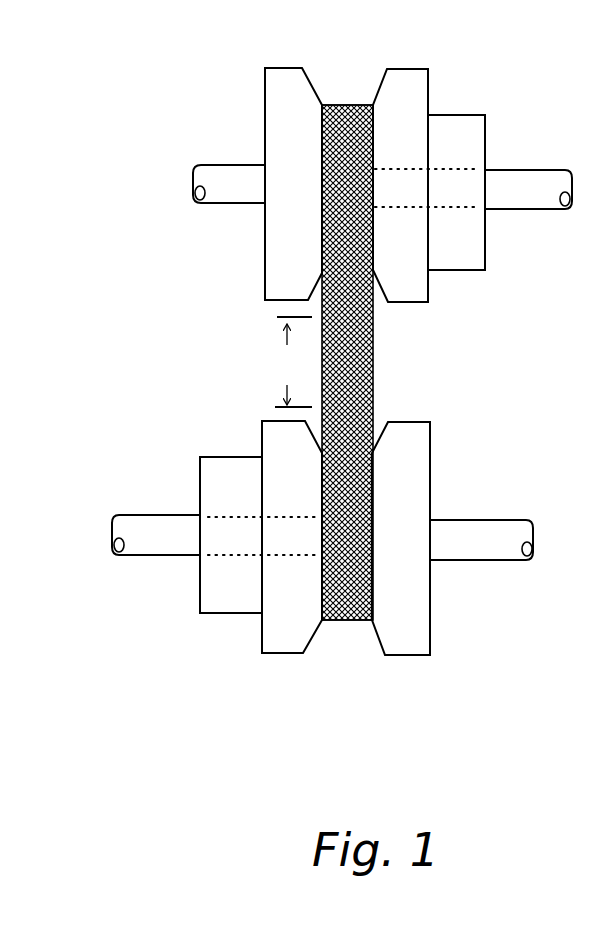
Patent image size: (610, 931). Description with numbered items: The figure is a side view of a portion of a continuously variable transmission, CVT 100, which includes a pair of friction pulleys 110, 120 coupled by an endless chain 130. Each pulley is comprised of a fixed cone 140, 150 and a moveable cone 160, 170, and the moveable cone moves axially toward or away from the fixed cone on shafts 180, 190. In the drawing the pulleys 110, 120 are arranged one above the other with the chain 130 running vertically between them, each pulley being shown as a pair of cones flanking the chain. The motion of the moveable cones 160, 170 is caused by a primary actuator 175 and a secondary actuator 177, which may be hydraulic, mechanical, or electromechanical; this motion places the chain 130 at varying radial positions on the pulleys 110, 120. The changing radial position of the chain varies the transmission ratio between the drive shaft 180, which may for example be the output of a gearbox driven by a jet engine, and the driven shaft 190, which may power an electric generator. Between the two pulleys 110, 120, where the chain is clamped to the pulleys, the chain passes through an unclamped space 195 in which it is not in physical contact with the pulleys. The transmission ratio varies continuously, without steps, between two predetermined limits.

The CVT 100 is at (374, 44).
The friction pulley 110 is at (350, 93).
The friction pulley 120 is at (348, 646).
The endless chain 130 is at (375, 357).
The fixed cone 140 is at (265, 72).
The fixed cone 150 is at (430, 436).
The moveable cone 160 is at (262, 432).
The moveable cone 170 is at (428, 80).
The primary actuator 175 is at (487, 240).
The secondary actuator 177 is at (200, 486).
The drive shaft 180 is at (219, 208).
The driven shaft 190 is at (466, 562).
The unclamped space 195 is at (289, 362).